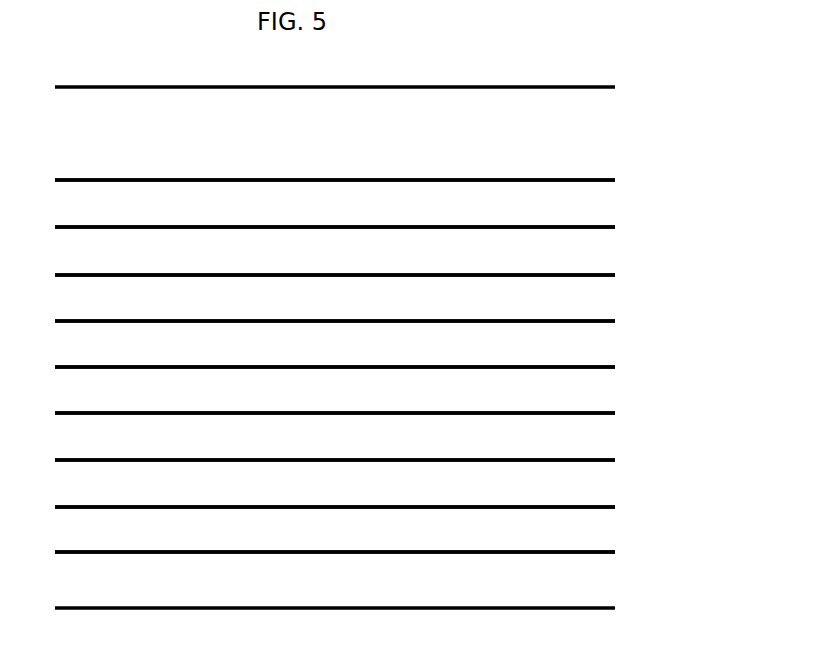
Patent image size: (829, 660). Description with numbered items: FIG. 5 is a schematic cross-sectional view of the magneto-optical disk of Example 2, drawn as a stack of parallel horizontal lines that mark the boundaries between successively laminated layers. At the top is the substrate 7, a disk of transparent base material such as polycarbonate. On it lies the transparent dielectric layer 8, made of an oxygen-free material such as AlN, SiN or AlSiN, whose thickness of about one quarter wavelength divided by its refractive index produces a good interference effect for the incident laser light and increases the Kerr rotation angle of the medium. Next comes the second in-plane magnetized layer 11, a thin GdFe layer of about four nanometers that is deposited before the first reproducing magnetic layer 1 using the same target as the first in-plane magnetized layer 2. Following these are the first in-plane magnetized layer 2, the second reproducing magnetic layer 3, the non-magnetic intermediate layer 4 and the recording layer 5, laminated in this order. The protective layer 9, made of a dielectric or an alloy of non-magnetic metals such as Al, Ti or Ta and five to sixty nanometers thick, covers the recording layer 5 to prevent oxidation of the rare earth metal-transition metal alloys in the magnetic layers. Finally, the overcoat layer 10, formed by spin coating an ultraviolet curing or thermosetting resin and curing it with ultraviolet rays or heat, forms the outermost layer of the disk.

The substrate 7 is at (620, 131).
The second in-plane magnetized layer 11 is at (615, 201).
The transparent dielectric layer 8 is at (614, 254).
The first reproducing magnetic layer 1 is at (612, 301).
The first in-plane magnetized layer 2 is at (612, 346).
The second reproducing magnetic layer 3 is at (612, 390).
The non-magnetic intermediate layer 4 is at (612, 438).
The recording layer 5 is at (608, 486).
The protective layer 9 is at (603, 533).
The overcoat layer 10 is at (603, 583).